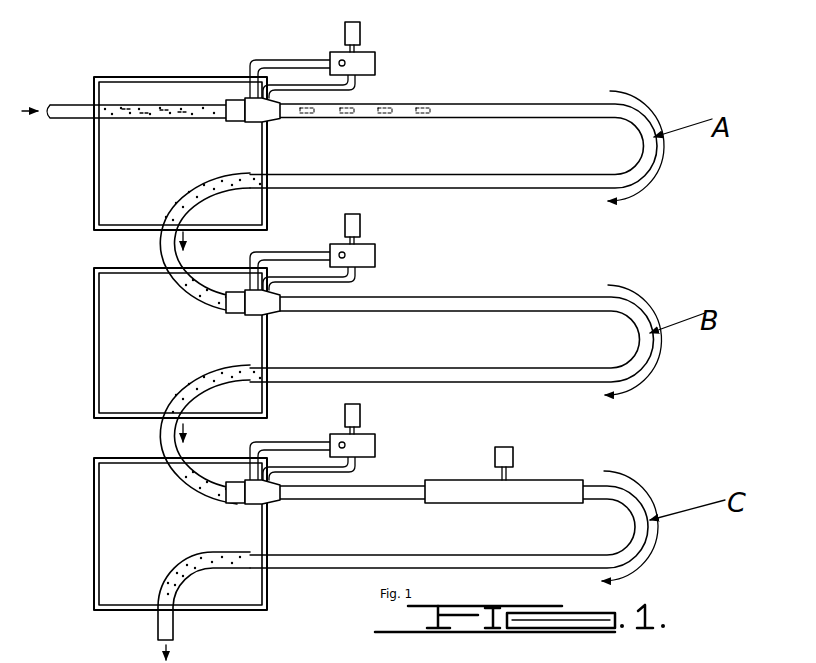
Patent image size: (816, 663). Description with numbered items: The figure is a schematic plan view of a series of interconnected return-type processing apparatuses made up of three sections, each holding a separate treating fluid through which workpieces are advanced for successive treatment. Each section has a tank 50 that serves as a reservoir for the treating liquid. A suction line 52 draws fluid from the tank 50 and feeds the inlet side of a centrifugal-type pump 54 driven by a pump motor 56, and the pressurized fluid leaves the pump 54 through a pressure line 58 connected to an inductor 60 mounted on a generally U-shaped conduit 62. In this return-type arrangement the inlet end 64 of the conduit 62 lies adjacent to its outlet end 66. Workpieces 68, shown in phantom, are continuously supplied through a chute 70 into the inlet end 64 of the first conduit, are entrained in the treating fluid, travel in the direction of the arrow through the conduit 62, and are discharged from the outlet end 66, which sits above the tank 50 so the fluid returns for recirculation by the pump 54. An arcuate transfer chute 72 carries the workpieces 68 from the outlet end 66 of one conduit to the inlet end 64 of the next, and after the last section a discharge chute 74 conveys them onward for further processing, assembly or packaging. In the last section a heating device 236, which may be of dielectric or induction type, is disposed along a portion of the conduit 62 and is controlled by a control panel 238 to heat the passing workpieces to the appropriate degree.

The tank 50 is at (95, 196).
The suction line 52 is at (356, 89).
The centrifugal-type pump 54 is at (378, 63).
The pump motor 56 is at (362, 34).
The pressure line 58 is at (300, 34).
The inductor 60 is at (278, 121).
The conduit 62 is at (552, 106).
The inlet end 64 is at (233, 121).
The outlet end 66 is at (260, 195).
The workpieces 68 is at (168, 106).
The chute 70 is at (78, 119).
The arcuate transfer chute 72 is at (170, 199).
The discharge chute 74 is at (180, 573).
The heating device 236 is at (552, 485).
The control panel 238 is at (540, 430).